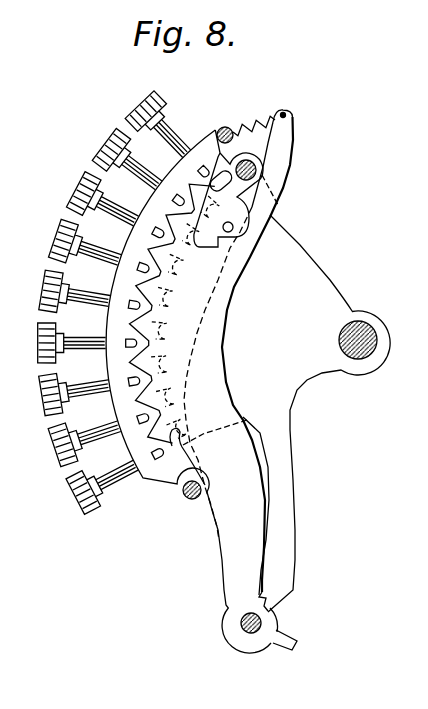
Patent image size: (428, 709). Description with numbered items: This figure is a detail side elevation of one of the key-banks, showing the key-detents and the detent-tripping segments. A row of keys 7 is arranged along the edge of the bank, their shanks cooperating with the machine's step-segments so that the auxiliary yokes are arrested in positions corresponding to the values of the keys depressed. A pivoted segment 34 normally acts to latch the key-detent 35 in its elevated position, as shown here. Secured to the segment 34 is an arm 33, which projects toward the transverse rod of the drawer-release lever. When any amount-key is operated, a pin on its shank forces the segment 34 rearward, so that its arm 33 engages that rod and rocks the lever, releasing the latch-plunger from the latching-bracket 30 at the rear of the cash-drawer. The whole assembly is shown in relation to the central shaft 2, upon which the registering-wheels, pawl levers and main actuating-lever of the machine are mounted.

The central shaft 2 is at (362, 358).
The keys 7 is at (95, 157).
The latching-bracket 30 is at (138, 266).
The arm 33 is at (285, 640).
The pivoted segment 34 is at (217, 295).
The key-detent 35 is at (298, 381).